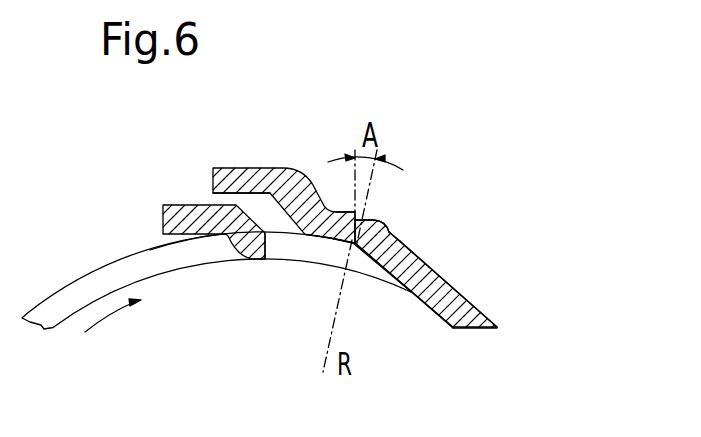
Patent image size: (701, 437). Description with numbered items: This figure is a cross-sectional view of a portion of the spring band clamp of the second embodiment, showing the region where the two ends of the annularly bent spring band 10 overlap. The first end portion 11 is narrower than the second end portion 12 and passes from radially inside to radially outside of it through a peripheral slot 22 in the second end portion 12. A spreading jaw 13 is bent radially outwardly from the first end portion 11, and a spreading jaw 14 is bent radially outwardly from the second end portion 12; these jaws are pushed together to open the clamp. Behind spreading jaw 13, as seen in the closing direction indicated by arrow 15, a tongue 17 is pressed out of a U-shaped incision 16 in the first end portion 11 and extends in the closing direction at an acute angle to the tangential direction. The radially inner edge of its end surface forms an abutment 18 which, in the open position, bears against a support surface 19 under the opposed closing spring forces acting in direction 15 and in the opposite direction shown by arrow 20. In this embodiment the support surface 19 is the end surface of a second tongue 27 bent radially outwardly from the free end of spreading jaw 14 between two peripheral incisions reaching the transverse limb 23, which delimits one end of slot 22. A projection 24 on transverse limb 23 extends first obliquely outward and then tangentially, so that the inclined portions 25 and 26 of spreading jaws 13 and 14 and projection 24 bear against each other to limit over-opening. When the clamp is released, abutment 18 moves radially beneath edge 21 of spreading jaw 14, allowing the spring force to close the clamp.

The spring band 10 is at (393, 340).
The first end portion 11 is at (467, 299).
The second end portion 12 is at (85, 273).
The spreading jaw 13 is at (183, 205).
The spreading jaw 14 is at (377, 226).
The closing direction 15 is at (405, 317).
The U-shaped incision 16 is at (363, 268).
The tongue 17 is at (400, 247).
The abutment 18 is at (384, 238).
The support surface 19 is at (370, 220).
The arrow 20 is at (107, 322).
The edge 21 is at (347, 241).
The peripheral slot 22 is at (121, 266).
The transverse limb 23 is at (325, 212).
The projection 24 is at (265, 167).
The inclined portion 25 is at (238, 192).
The inclined portion 26 is at (301, 233).
The second tongue 27 is at (325, 234).